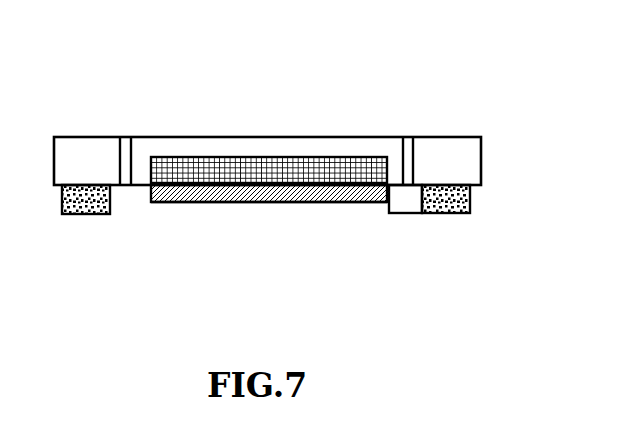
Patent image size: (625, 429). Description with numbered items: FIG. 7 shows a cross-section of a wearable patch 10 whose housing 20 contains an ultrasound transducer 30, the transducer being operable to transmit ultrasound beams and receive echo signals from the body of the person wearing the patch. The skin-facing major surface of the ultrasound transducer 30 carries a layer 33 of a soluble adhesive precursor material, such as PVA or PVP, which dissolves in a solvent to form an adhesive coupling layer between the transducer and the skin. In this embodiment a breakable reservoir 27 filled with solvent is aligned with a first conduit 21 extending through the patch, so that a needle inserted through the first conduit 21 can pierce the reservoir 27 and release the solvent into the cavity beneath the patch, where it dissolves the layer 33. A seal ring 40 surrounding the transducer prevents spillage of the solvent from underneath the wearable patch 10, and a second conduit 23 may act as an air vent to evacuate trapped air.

The wearable patch 10 is at (518, 123).
The housing 20 is at (212, 148).
The first conduit 21 is at (409, 137).
The second conduit 23 is at (128, 137).
The breakable reservoir 27 is at (411, 198).
The ultrasound transducer 30 is at (278, 202).
The layer of soluble precursor material 33 is at (197, 202).
The seal ring 40 is at (83, 214).